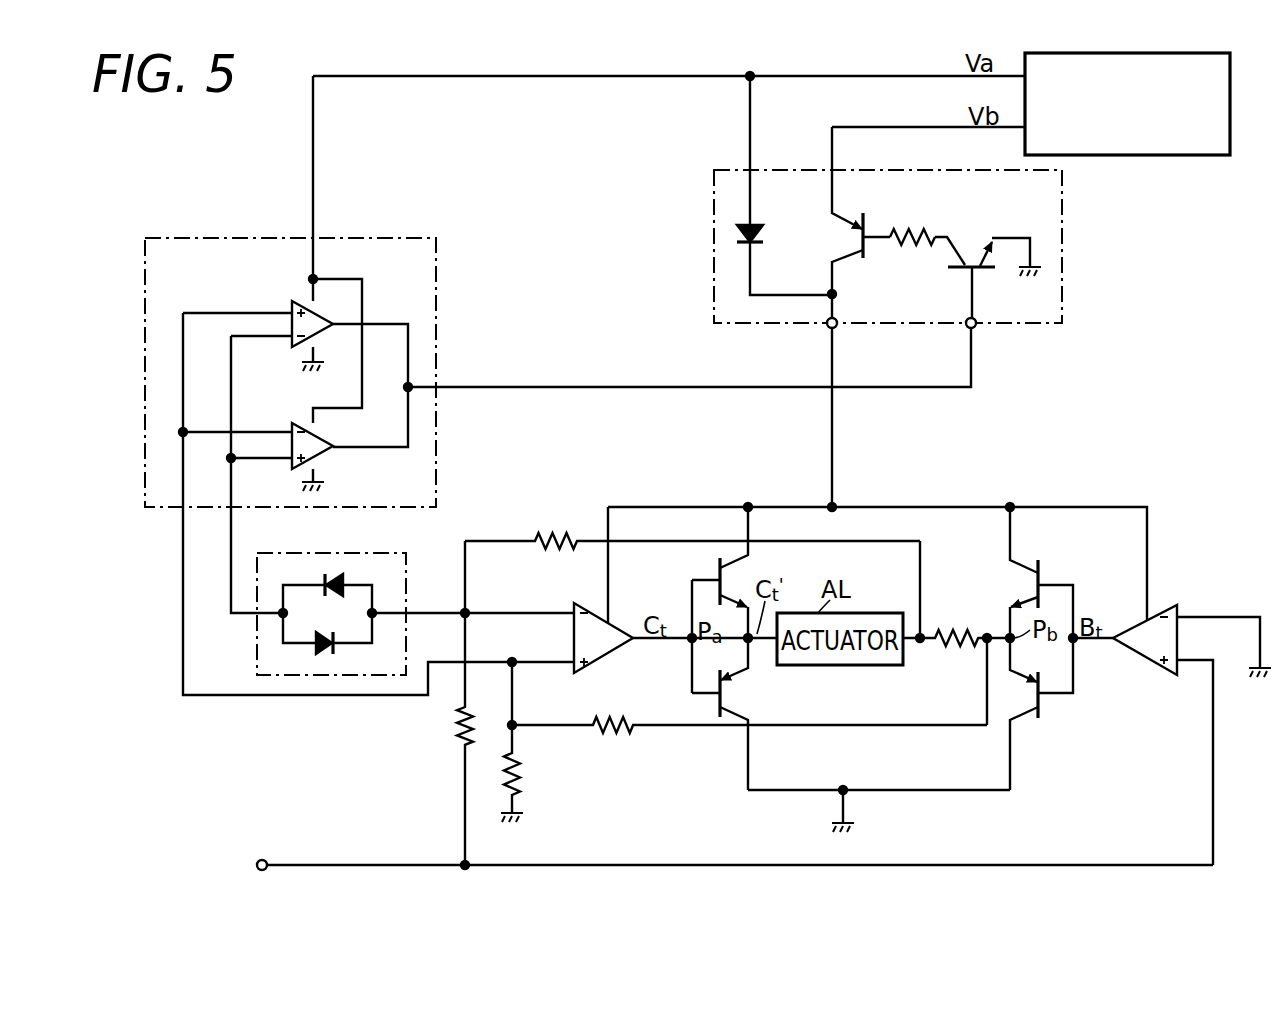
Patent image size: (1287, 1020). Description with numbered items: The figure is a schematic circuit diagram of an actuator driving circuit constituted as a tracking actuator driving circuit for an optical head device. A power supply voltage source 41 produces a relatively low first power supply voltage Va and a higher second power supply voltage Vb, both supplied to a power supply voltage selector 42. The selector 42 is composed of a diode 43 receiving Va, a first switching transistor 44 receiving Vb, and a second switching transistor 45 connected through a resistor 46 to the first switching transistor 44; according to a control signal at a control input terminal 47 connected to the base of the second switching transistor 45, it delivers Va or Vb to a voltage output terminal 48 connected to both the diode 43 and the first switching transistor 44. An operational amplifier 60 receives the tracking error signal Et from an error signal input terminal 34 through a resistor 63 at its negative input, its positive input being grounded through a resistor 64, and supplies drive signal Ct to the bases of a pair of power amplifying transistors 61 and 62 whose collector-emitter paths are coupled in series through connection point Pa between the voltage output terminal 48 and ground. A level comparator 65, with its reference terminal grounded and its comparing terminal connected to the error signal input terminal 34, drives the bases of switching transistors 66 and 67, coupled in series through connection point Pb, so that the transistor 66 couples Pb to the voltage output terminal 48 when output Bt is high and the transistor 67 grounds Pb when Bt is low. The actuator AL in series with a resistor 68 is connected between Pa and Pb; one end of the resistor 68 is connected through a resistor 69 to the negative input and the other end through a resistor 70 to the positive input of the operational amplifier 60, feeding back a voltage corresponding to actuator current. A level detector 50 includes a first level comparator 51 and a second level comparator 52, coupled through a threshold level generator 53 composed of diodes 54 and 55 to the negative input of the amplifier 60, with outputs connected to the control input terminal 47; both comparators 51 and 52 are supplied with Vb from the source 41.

The error signal input terminal 34 is at (266, 860).
The power supply voltage source 41 is at (1143, 157).
The power supply voltage selector 42 is at (1062, 215).
The diode 43 is at (763, 238).
The first switching transistor 44 is at (866, 236).
The second switching transistor 45 is at (978, 270).
The resistor 46 is at (915, 244).
The control input terminal 47 is at (976, 327).
The voltage output terminal 48 is at (837, 327).
The level detector 50 is at (275, 238).
The first level comparator 51 is at (293, 301).
The second level comparator 52 is at (293, 423).
The threshold level generator 53 is at (383, 553).
The diode 54 is at (336, 646).
The diode 55 is at (324, 580).
The operational amplifier 60 is at (611, 655).
The power amplifying transistor 61 is at (716, 566).
The power amplifying transistor 62 is at (716, 701).
The resistor 63 is at (458, 726).
The resistor 64 is at (520, 773).
The level comparator 65 is at (1152, 661).
The switching transistor 66 is at (1042, 571).
The switching transistor 67 is at (1042, 706).
The resistor 68 is at (950, 646).
The resistor 69 is at (545, 537).
The resistor 70 is at (630, 738).